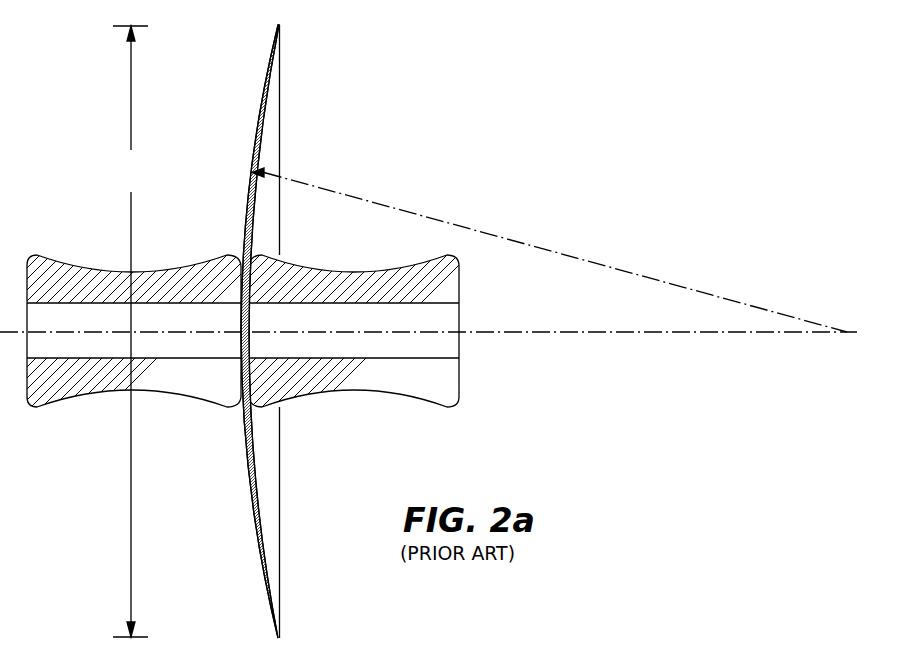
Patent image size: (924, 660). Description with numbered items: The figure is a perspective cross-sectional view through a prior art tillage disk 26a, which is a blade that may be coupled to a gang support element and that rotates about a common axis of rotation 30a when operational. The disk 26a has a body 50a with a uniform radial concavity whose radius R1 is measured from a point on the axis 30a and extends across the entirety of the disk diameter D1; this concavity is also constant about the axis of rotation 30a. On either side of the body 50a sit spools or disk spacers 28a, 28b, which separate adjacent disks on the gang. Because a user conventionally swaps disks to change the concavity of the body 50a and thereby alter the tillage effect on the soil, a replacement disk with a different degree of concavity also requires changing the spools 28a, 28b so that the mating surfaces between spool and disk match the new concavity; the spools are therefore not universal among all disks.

The disk 26a is at (255, 118).
The body 50a is at (278, 79).
The spool 28a is at (177, 395).
The spool 28b is at (383, 393).
The axis of rotation 30a is at (648, 333).
The radius R1 is at (423, 215).
The disk diameter D1 is at (130, 331).